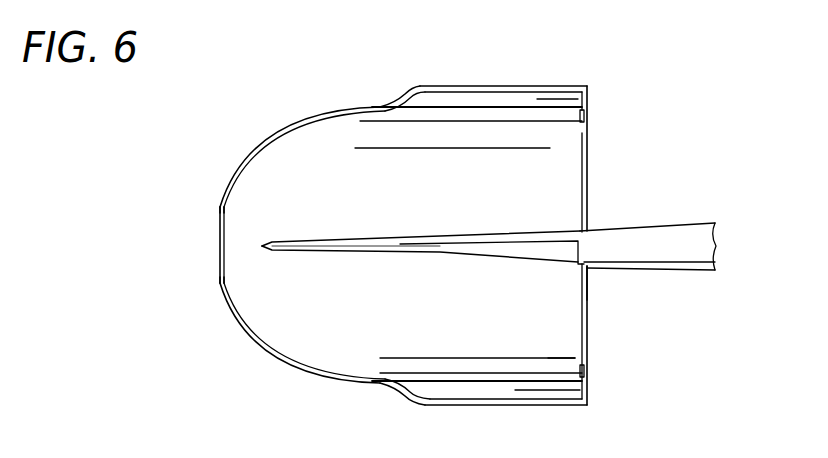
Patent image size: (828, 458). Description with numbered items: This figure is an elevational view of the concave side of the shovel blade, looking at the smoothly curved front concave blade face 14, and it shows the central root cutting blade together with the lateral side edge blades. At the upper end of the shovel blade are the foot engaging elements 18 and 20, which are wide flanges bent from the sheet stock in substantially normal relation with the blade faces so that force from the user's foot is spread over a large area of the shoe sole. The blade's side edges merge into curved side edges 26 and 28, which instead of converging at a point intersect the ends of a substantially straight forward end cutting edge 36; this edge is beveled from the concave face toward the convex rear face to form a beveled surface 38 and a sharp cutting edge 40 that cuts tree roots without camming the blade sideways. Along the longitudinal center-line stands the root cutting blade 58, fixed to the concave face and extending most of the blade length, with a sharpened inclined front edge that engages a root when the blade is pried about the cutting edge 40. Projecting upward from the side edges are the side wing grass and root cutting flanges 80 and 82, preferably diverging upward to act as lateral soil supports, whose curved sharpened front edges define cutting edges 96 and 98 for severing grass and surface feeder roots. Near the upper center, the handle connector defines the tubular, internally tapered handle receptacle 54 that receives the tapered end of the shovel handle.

The front concave blade face 14 is at (548, 358).
The foot engaging element 18 is at (588, 158).
The foot engaging element 20 is at (590, 322).
The curved side edge 26 is at (277, 142).
The curved side edge 28 is at (255, 338).
The forward end cutting edge 36 is at (218, 207).
The beveled surface 38 is at (218, 238).
The sharp cutting edge 40 is at (218, 268).
The handle receptacle 54 is at (680, 228).
The root cutting blade 58 is at (397, 250).
The side wing grass and root cutting flange 80 is at (487, 86).
The side wing grass and root cutting flange 82 is at (492, 404).
The cutting edge 96 is at (400, 94).
The cutting edge 98 is at (388, 384).